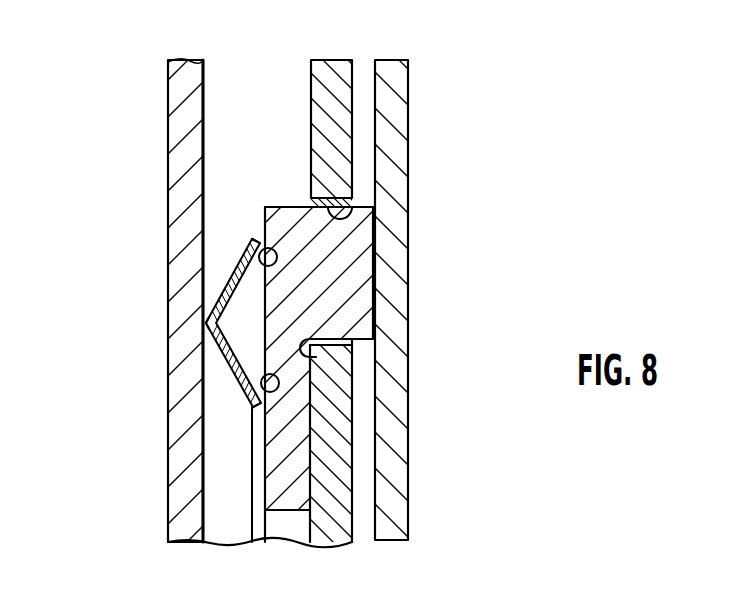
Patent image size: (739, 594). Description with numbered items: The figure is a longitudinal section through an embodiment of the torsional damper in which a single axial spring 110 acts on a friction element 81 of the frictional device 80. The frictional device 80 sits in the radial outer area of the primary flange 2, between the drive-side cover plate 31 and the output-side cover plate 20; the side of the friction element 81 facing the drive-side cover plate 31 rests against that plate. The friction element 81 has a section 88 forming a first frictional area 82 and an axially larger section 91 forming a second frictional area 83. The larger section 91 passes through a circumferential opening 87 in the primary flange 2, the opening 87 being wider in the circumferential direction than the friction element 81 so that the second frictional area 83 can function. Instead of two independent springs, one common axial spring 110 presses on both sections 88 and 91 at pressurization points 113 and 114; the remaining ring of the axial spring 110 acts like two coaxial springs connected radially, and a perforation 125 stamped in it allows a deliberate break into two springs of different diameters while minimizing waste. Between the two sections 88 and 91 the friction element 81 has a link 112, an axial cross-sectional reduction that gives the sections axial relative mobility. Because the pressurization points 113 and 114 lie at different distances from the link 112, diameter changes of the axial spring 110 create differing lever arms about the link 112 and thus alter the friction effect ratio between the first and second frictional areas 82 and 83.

The frictional device 80 is at (241, 170).
The drive-side cover plate 31 is at (177, 112).
The primary flange 2 is at (325, 92).
The output-side cover plate 20 is at (387, 103).
The friction element 81 is at (340, 290).
The section 91 is at (357, 248).
The circumferential opening 87 is at (337, 222).
The second frictional area 83 is at (265, 266).
The axial spring 110 is at (222, 295).
The pressurization point 113 is at (263, 233).
The perforation 125 is at (207, 325).
The pressurization point 114 is at (262, 420).
The link 112 is at (312, 350).
The first frictional area 82 is at (310, 380).
The section 88 is at (303, 477).